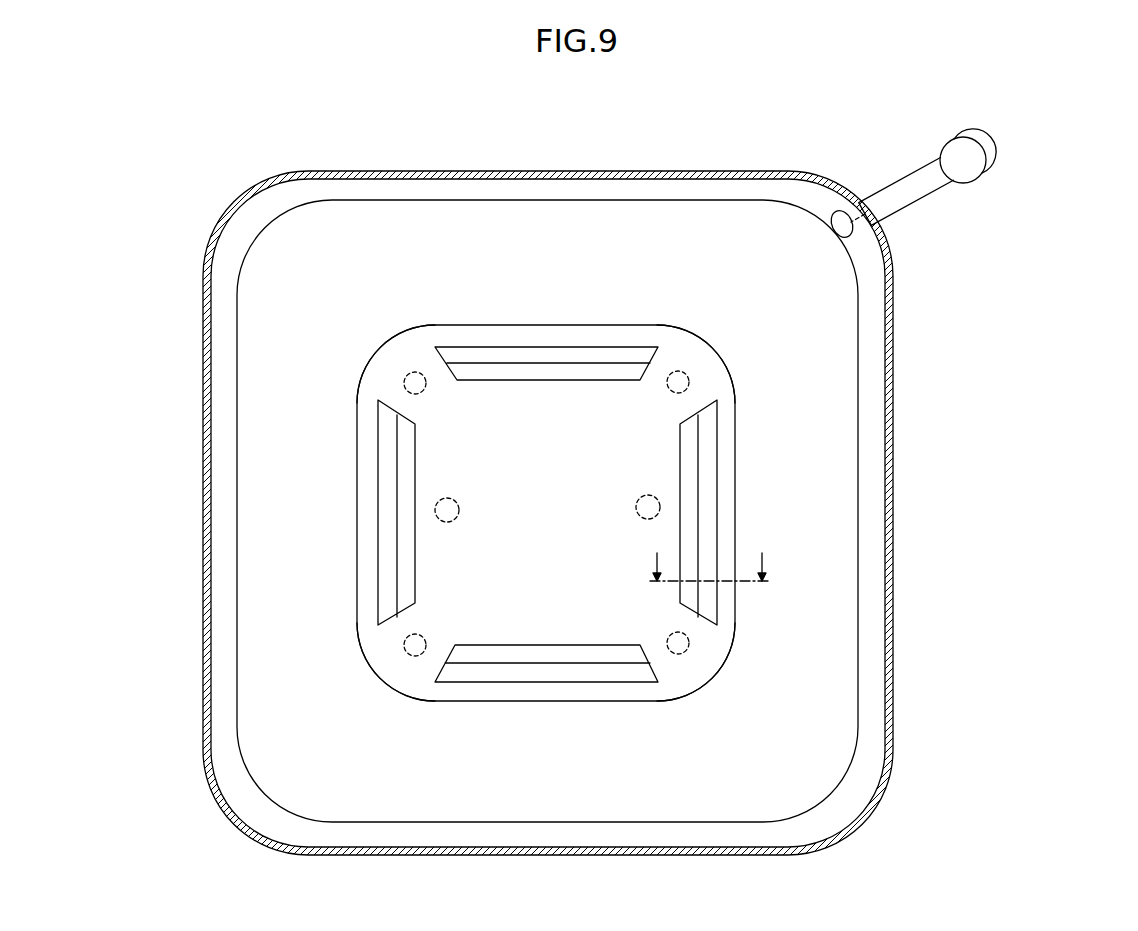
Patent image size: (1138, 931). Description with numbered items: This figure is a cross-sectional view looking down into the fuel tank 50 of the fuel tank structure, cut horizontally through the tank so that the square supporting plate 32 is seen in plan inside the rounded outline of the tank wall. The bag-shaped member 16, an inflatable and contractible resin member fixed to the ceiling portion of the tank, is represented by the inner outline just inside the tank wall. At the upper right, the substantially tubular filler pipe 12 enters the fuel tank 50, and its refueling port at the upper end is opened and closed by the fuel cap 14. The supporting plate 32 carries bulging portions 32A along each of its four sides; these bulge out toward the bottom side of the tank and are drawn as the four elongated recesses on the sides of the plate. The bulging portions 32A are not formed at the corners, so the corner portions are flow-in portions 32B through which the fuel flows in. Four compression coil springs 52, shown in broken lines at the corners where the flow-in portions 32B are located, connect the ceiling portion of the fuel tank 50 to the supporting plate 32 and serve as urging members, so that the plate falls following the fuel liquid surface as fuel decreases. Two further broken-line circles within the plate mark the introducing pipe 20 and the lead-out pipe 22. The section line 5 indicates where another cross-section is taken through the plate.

The fuel tank 50 is at (537, 172).
The bag-shaped member 16 is at (858, 527).
The filler pipe 12 is at (936, 195).
The fuel cap 14 is at (985, 150).
The supporting plate 32 is at (612, 708).
The bulging portions 32A is at (598, 345).
The flow-in portions 32B is at (415, 347).
The compression coil springs 52 is at (404, 382).
The introducing pipe 20 is at (447, 498).
The lead-out pipe 22 is at (648, 495).
The section line 5 is at (710, 552).